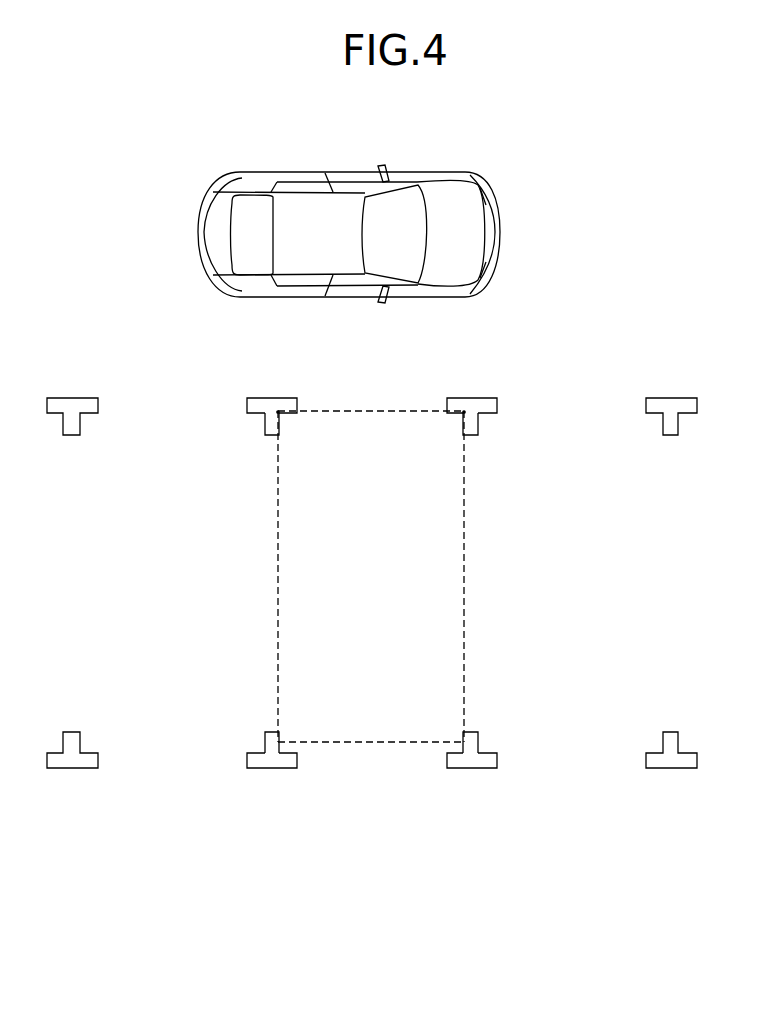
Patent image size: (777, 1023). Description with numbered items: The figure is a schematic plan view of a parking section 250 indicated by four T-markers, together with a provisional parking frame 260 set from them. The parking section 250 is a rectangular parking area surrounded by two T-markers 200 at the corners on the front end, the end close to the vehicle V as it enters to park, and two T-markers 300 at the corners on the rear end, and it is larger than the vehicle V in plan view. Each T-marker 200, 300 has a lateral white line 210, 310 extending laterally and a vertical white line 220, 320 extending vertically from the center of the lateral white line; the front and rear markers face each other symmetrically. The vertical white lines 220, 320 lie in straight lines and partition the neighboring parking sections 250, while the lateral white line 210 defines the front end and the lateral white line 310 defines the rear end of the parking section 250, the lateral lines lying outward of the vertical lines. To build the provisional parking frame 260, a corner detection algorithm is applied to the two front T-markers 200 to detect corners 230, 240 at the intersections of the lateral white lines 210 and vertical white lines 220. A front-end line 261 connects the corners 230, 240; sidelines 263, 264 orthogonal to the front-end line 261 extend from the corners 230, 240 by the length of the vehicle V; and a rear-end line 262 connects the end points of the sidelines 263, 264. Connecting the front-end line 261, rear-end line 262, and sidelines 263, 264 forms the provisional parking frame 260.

The vehicle V is at (483, 178).
The T-marker 200 is at (372, 394).
The lateral white line 210 is at (252, 405).
The vertical white line 220 is at (263, 422).
The corner 230 is at (280, 413).
The corner 240 is at (462, 412).
The parking section 250 is at (138, 591).
The provisional parking frame 260 is at (421, 587).
The front-end line 261 is at (352, 411).
The rear-end line 262 is at (373, 742).
The sideline 263 is at (277, 540).
The sideline 264 is at (465, 652).
The T-marker 300 is at (372, 774).
The lateral white line 310 is at (252, 762).
The vertical white line 320 is at (268, 742).